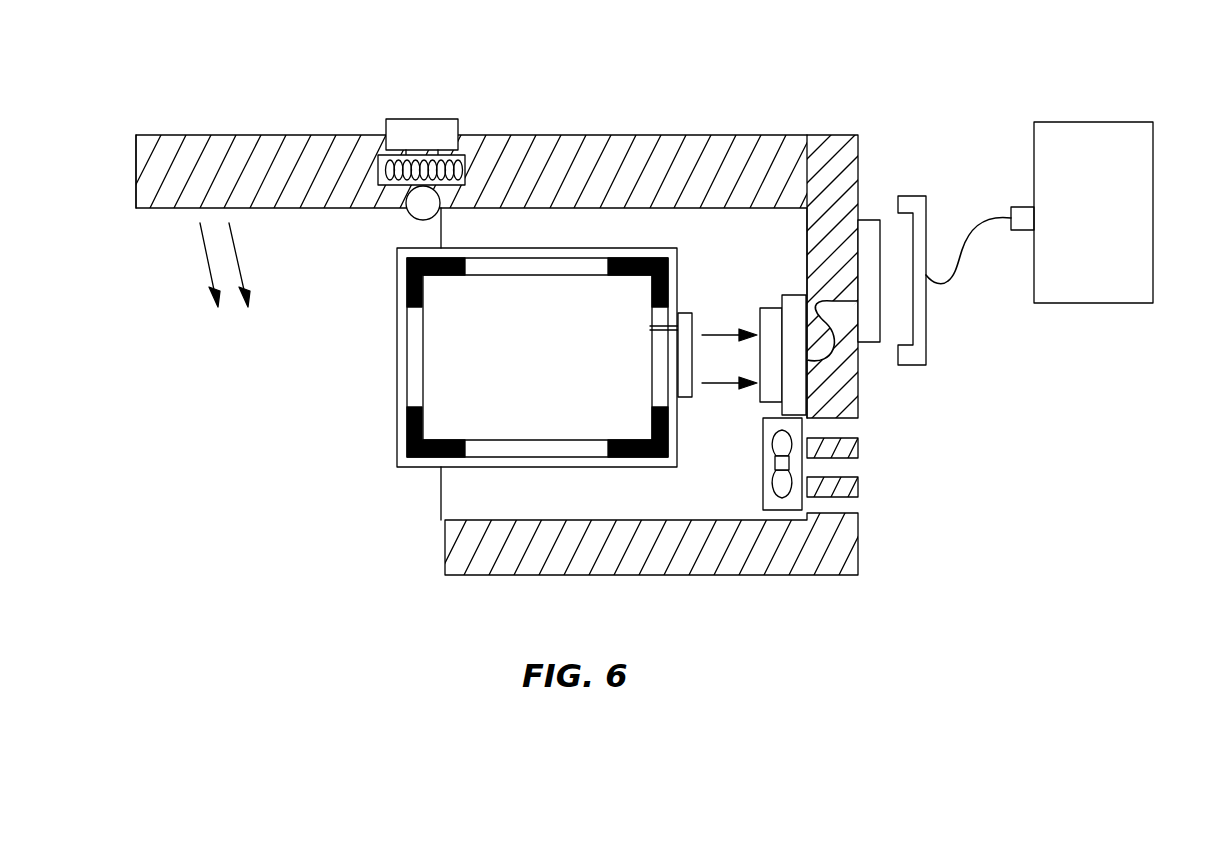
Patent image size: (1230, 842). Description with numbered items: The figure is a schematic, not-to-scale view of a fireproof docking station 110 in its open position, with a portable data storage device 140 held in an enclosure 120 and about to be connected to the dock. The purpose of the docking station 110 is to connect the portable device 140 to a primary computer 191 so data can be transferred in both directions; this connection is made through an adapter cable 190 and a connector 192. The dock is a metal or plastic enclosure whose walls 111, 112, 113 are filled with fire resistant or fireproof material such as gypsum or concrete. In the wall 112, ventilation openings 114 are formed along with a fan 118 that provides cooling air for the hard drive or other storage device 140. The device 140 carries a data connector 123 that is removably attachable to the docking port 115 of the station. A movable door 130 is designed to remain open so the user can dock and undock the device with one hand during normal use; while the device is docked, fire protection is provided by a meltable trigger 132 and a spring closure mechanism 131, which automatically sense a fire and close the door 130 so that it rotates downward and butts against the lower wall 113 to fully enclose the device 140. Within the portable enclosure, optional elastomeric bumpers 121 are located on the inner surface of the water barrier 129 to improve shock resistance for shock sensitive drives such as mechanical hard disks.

The fireproof docking station 110 is at (833, 97).
The wall 111 is at (717, 152).
The wall 112 is at (842, 172).
The lower wall 113 is at (792, 567).
The ventilation openings 114 is at (843, 430).
The docking port 115 is at (772, 307).
The fan 118 is at (770, 486).
The enclosure 120 is at (471, 346).
The elastomeric bumpers 121 is at (397, 358).
The data connector 123 is at (687, 312).
The water barrier 129 is at (540, 253).
The movable door 130 is at (270, 132).
The spring closure mechanism 131 is at (480, 140).
The meltable trigger 132 is at (435, 119).
The portable data storage device 140 is at (558, 372).
The adapter cable 190 is at (958, 275).
The primary computer 191 is at (1120, 285).
The connector 192 is at (926, 338).